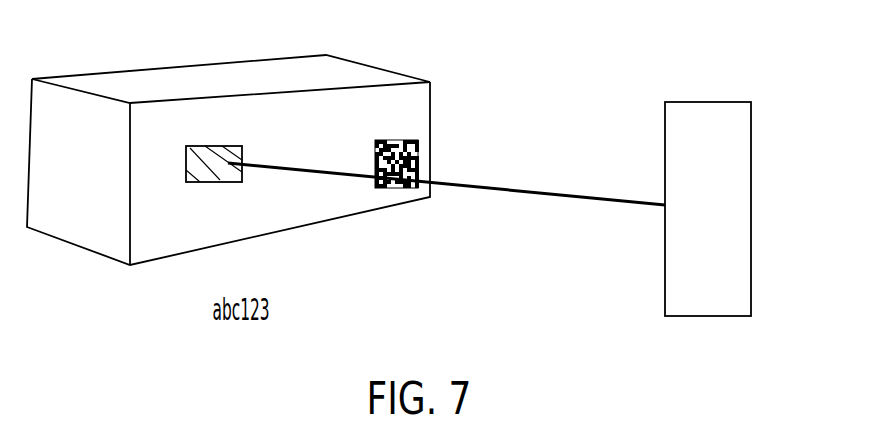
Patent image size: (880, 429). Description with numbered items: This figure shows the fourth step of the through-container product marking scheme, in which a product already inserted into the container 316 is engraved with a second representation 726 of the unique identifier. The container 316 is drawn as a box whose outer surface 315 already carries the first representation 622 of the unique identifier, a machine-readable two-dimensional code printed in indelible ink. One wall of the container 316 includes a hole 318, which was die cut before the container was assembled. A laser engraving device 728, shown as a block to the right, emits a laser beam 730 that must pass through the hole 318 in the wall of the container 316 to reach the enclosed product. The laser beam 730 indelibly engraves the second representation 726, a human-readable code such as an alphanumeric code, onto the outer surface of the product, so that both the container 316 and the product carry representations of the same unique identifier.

The outer surface 315 is at (305, 210).
The container 316 is at (232, 72).
The hole 318 is at (240, 161).
The second representation 726 is at (204, 160).
The first representation 622 is at (415, 152).
The laser beam 730 is at (482, 191).
The laser engraving device 728 is at (707, 102).